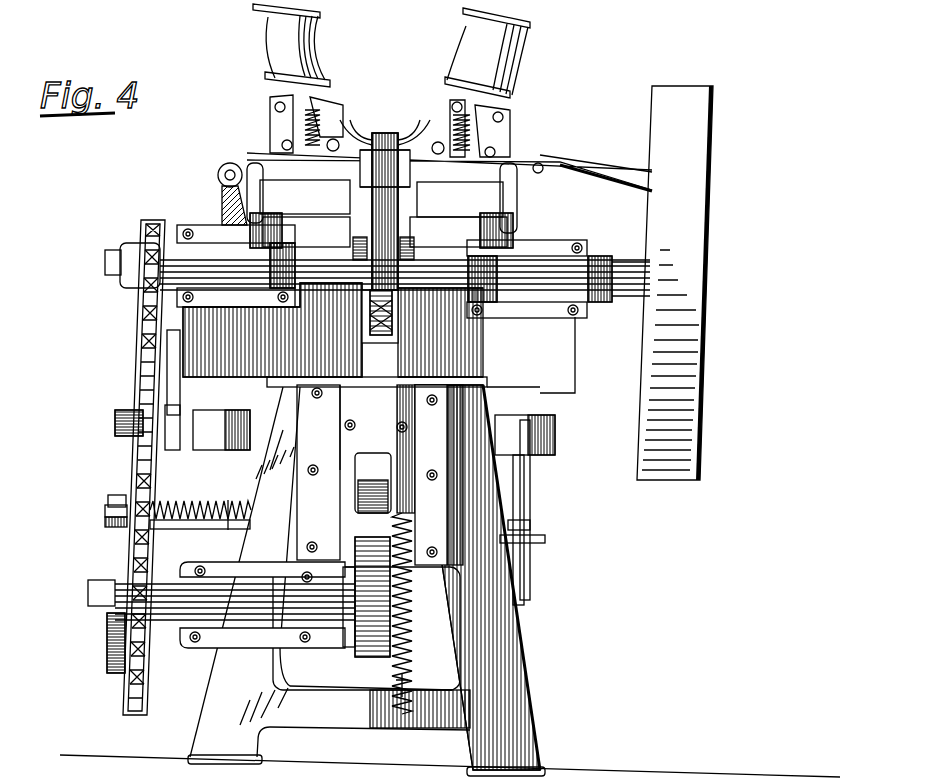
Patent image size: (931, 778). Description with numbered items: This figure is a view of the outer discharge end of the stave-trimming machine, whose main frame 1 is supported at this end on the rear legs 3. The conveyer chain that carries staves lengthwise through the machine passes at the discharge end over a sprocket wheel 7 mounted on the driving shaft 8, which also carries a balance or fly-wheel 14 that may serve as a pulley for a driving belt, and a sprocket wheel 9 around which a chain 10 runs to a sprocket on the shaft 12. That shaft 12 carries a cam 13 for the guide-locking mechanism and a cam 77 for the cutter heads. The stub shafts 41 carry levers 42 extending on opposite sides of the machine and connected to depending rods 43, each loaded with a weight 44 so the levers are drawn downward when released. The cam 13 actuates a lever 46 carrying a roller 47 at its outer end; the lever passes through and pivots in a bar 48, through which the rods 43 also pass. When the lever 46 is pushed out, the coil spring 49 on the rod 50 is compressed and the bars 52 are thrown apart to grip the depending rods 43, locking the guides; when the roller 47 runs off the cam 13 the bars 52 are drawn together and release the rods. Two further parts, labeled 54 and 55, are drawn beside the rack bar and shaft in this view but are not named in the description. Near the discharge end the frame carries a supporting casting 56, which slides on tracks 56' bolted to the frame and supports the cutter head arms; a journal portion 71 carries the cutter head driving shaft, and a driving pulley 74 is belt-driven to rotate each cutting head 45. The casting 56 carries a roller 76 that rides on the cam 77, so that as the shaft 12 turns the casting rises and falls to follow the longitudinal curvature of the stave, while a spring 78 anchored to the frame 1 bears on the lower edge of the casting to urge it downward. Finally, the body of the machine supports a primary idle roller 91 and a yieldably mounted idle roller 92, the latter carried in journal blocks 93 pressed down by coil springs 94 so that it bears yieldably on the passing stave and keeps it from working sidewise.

The main frame 1 is at (558, 372).
The rear legs 3 is at (478, 692).
The sprocket wheel 7 is at (398, 322).
The driving shaft 8 is at (632, 296).
The sprocket wheel 9 is at (157, 222).
The chain 10 is at (140, 343).
The shaft 12 is at (97, 588).
The cam 13 is at (110, 672).
The balance or fly-wheel 14 is at (675, 176).
The stub shafts 41 is at (386, 130).
The levers 42 is at (246, 160).
The depending rods 43 is at (532, 505).
The weight 44 is at (248, 410).
The cutting heads 45 is at (200, 500).
The lever 46 is at (105, 510).
The roller 47 is at (110, 528).
The bar 48 is at (546, 538).
The coil spring 49 is at (164, 508).
The rod 50 is at (110, 495).
The bars 52 is at (510, 520).
The guide 54 is at (182, 418).
The shaft stub 55 is at (116, 420).
The supporting casting 56 is at (359, 475).
The tracks 56' is at (292, 470).
The journal portion 71 is at (280, 128).
The driving pulley 74 is at (292, 55).
The roller 76 is at (358, 505).
The cam 77 is at (390, 628).
The spring 78 is at (410, 596).
The primary idle roller 91 is at (380, 233).
The yieldably mounted idle roller 92 is at (382, 133).
The journal blocks 93 is at (312, 172).
The coil springs 94 is at (325, 120).